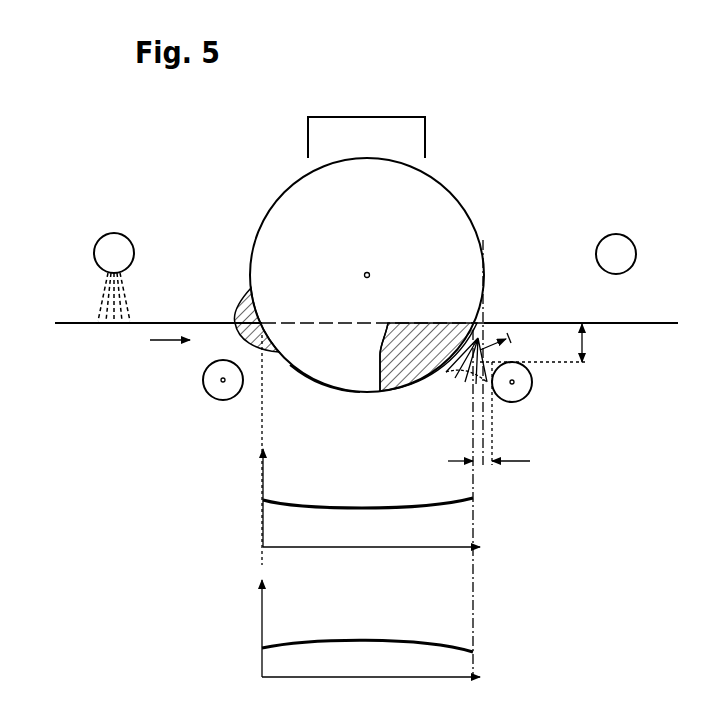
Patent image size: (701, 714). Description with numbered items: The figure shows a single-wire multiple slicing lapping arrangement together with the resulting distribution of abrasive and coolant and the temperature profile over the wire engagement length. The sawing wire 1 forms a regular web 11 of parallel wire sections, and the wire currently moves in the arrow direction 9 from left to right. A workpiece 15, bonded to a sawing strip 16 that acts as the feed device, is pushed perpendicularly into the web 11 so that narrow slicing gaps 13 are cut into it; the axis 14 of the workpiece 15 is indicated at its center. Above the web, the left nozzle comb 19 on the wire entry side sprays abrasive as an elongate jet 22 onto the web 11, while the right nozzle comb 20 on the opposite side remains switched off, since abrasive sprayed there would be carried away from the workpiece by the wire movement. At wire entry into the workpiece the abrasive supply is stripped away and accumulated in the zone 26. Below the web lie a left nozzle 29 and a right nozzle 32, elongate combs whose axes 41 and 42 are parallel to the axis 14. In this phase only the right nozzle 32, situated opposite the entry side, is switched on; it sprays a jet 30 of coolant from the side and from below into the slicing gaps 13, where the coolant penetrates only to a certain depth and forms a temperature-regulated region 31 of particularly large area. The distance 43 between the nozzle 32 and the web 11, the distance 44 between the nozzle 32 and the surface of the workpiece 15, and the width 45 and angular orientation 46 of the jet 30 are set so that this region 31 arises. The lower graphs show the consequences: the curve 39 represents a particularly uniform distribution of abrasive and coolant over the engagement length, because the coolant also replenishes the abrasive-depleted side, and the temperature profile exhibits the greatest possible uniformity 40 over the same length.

The sawing wire 1 is at (212, 323).
The web 11 is at (366, 292).
The arrow direction 9 is at (165, 341).
The slicing gaps 13 is at (326, 366).
The axis 14 is at (370, 273).
The workpiece 15 is at (296, 208).
The sawing strip 16 is at (407, 148).
The left nozzle comb 19 is at (112, 252).
The right nozzle comb 20 is at (614, 252).
The left elongate jet 22 is at (100, 305).
The zone 26 is at (240, 296).
The left nozzle 29 is at (206, 420).
The jet of coolant 30 is at (440, 383).
The temperature-regulated region 31 is at (380, 357).
The right nozzle 32 is at (538, 409).
The curve 39 is at (357, 505).
The uniformity 40 is at (357, 641).
The axis 41 is at (221, 382).
The axis 42 is at (514, 384).
The distance 43 is at (587, 342).
The distance 44 is at (486, 465).
The width 45 is at (443, 388).
The angular orientation 46 is at (493, 344).